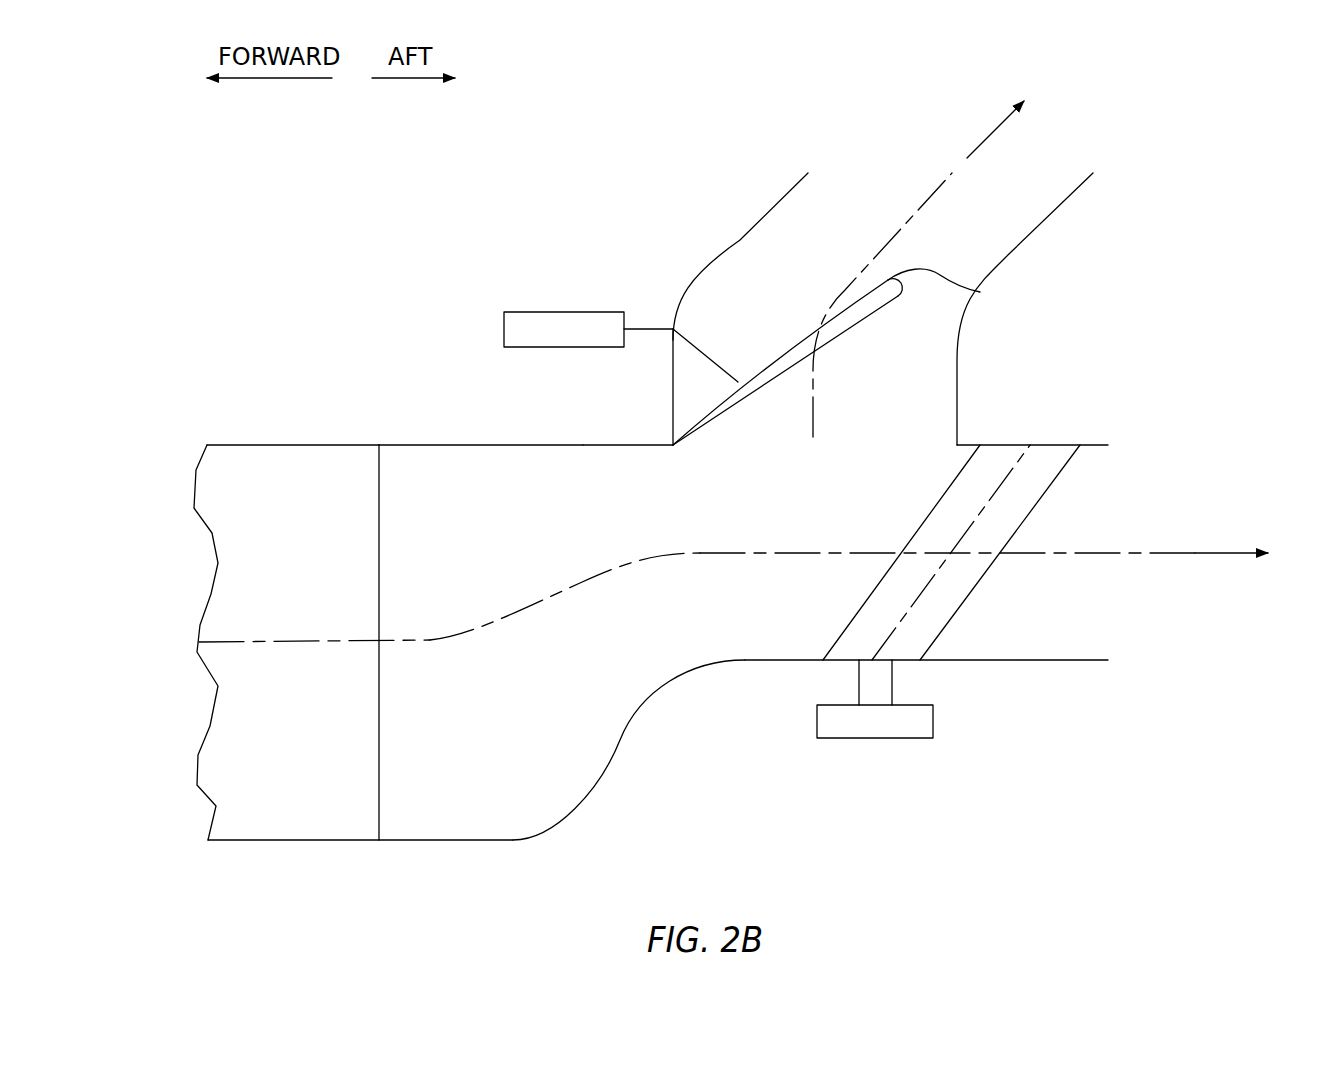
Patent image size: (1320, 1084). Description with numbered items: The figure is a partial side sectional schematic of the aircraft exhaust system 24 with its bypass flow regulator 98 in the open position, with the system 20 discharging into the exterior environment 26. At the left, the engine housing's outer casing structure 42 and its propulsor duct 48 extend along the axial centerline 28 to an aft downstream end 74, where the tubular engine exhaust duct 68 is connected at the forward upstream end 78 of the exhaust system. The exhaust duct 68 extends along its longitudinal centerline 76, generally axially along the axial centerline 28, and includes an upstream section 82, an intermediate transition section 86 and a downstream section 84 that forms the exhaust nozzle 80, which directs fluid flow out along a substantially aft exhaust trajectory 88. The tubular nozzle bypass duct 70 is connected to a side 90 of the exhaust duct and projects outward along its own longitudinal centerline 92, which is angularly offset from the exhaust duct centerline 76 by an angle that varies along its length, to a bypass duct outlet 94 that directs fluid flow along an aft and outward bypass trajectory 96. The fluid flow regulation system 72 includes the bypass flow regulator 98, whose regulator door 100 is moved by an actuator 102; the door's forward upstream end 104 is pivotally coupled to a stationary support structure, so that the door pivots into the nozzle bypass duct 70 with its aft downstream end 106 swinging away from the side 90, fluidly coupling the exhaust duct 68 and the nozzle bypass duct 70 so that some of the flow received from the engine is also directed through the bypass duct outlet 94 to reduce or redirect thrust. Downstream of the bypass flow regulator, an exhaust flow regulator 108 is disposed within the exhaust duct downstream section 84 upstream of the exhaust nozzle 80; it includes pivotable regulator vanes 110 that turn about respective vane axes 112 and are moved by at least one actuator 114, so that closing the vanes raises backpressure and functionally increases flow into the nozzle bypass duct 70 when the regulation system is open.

The gas turbine engine 20 is at (196, 148).
The exhaust system 24 is at (550, 183).
The exterior environment 26 is at (1198, 283).
The axial centerline 28 is at (236, 640).
The outer casing structure 42 is at (292, 428).
The propulsor duct 48 is at (243, 445).
The engine exhaust duct 68 is at (640, 773).
The nozzle bypass duct 70 is at (705, 206).
The fluid flow regulation system 72 is at (1012, 405).
The aft downstream end of the outer casing structure 74 is at (379, 445).
The longitudinal centerline of the exhaust duct 76 is at (577, 586).
The forward upstream end of the exhaust duct 78 is at (379, 445).
The exhaust nozzle 80 is at (1124, 458).
The exhaust duct upstream section 82 is at (448, 840).
The exhaust duct downstream section 84 is at (1038, 660).
The exhaust duct intermediate section 86 is at (630, 723).
The exhaust trajectory 88 is at (1235, 553).
The side of the exhaust duct 90 is at (583, 445).
The longitudinal centerline of the nozzle bypass duct 92 is at (903, 212).
The bypass duct outlet 94 is at (840, 183).
The bypass trajectory 96 is at (978, 140).
The bypass flow regulator 98 is at (735, 424).
The regulator door 100 is at (866, 318).
The actuator 102 is at (545, 312).
The forward upstream end of the regulator door 104 is at (667, 450).
The aft downstream end of the regulator door 106 is at (980, 292).
The exhaust flow regulator 108 is at (982, 622).
The regulator vanes 110 is at (1035, 505).
The vane axis 112 is at (895, 630).
The actuator 114 is at (875, 738).